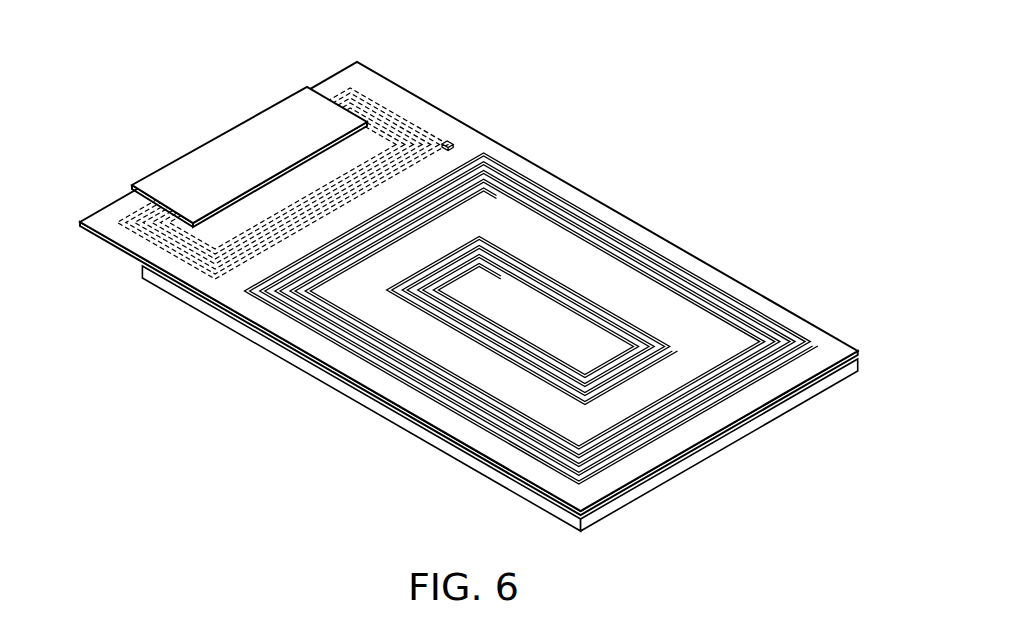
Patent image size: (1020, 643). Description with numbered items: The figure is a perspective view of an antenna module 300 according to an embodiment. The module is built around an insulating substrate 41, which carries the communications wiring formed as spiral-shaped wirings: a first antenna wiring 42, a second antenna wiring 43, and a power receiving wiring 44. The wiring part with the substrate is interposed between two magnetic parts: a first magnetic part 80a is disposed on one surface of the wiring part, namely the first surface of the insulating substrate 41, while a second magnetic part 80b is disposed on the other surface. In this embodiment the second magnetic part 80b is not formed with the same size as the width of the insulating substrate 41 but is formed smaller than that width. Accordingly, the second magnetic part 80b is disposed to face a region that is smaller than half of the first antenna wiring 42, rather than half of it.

The antenna module 300 is at (467, 289).
The insulating substrate 41 is at (655, 240).
The first antenna wiring 42 is at (407, 120).
The second antenna wiring 43 is at (547, 197).
The power receiving wiring 44 is at (653, 332).
The first magnetic part 80a is at (160, 285).
The second magnetic part 80b is at (217, 142).